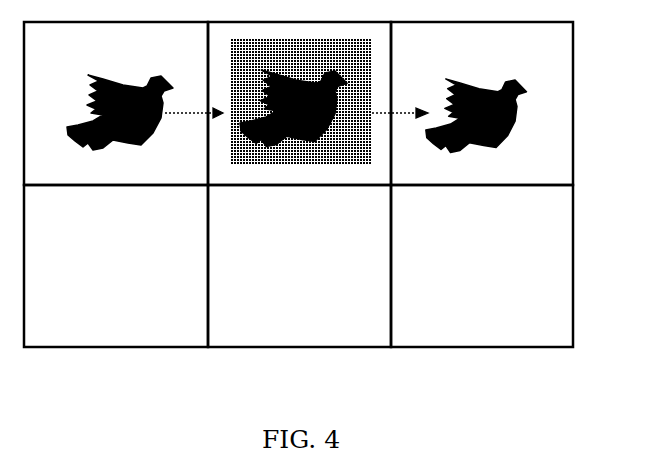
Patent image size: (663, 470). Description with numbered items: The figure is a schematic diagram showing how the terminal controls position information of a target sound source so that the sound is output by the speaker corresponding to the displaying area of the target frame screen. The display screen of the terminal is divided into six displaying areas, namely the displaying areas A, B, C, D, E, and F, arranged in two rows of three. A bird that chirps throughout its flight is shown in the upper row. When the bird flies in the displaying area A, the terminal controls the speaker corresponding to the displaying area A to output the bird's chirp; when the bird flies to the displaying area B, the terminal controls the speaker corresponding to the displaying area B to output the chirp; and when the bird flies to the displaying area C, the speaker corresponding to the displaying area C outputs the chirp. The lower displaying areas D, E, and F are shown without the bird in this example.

The displaying area A is at (116, 103).
The displaying area B is at (299, 103).
The displaying area C is at (482, 103).
The displaying area D is at (116, 266).
The displaying area E is at (299, 266).
The displaying area F is at (482, 266).